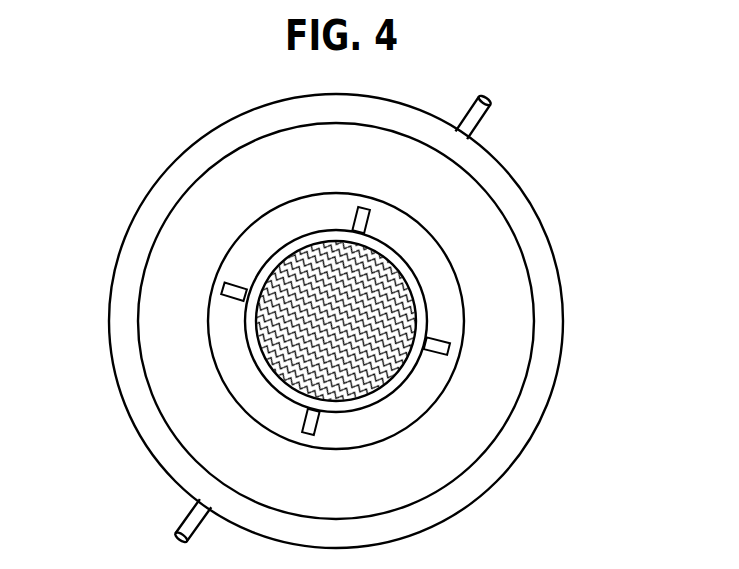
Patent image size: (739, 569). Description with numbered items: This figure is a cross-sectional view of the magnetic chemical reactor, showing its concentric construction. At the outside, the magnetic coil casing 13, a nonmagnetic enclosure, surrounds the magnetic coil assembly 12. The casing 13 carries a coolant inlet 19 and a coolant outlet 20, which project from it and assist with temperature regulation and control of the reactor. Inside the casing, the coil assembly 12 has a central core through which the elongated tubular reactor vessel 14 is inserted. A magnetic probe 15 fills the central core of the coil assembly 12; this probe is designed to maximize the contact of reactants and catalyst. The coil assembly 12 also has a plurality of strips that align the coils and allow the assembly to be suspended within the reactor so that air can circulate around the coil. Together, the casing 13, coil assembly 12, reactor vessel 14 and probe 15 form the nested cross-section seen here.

The magnetic coil assembly 12 is at (162, 380).
The magnetic coil casing 13 is at (518, 453).
The elongated tubular reactor vessel 14 is at (277, 248).
The magnetic probe 15 is at (402, 296).
The coolant inlet 19 is at (183, 525).
The coolant outlet 20 is at (473, 135).